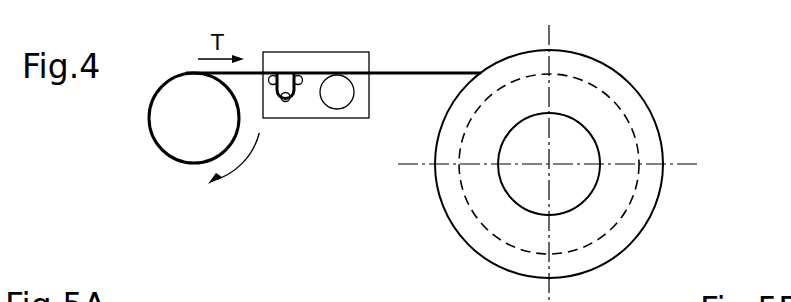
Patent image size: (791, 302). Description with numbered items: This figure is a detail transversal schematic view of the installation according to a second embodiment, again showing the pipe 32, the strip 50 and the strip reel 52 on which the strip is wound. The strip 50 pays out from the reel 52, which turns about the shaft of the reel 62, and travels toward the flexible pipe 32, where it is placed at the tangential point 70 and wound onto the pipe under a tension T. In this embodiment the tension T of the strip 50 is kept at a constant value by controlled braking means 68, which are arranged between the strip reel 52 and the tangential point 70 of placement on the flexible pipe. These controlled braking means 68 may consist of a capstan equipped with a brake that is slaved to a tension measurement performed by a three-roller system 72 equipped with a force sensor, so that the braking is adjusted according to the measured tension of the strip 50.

The pipe 32 is at (165, 107).
The tangential point 70 is at (190, 72).
The three-roller system 72 is at (286, 60).
The controlled braking means 68 is at (308, 110).
The strip 50 is at (450, 73).
The strip reel 52 is at (640, 112).
The shaft of the reel 62 is at (547, 165).